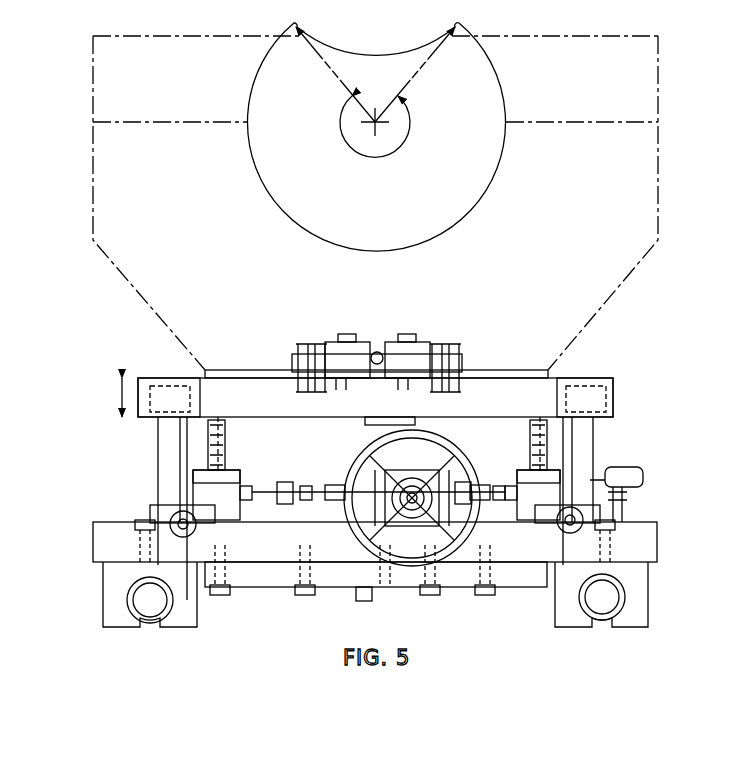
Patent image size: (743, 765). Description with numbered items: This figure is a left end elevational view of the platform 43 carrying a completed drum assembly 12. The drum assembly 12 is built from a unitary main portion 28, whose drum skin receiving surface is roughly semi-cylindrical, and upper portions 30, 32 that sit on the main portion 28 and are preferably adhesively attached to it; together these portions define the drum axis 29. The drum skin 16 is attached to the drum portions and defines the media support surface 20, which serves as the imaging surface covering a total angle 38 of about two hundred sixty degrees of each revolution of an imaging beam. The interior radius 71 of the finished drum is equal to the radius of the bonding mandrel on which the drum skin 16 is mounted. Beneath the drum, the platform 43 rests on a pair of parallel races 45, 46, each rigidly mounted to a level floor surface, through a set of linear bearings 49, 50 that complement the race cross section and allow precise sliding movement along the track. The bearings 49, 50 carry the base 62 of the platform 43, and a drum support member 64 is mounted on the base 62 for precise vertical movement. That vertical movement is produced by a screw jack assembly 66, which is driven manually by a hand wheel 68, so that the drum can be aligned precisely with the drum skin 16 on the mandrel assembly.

The drum assembly 12 is at (680, 86).
The upper portion 30 is at (170, 91).
The upper portion 32 is at (582, 91).
The main portion 28 is at (375, 313).
The drum skin 16 is at (268, 195).
The media support surface 20 is at (287, 212).
The drum axis 29 is at (375, 118).
The interior radius 71 is at (428, 84).
The total angle 38 is at (403, 152).
The platform 43 is at (100, 356).
The drum support member 64 is at (148, 378).
The base 62 is at (124, 520).
The screw jack assembly 66 is at (300, 468).
The hand wheel 68 is at (357, 466).
The linear bearing 49 is at (124, 570).
The race 45 is at (150, 600).
The linear bearing 50 is at (620, 568).
The race 46 is at (602, 597).